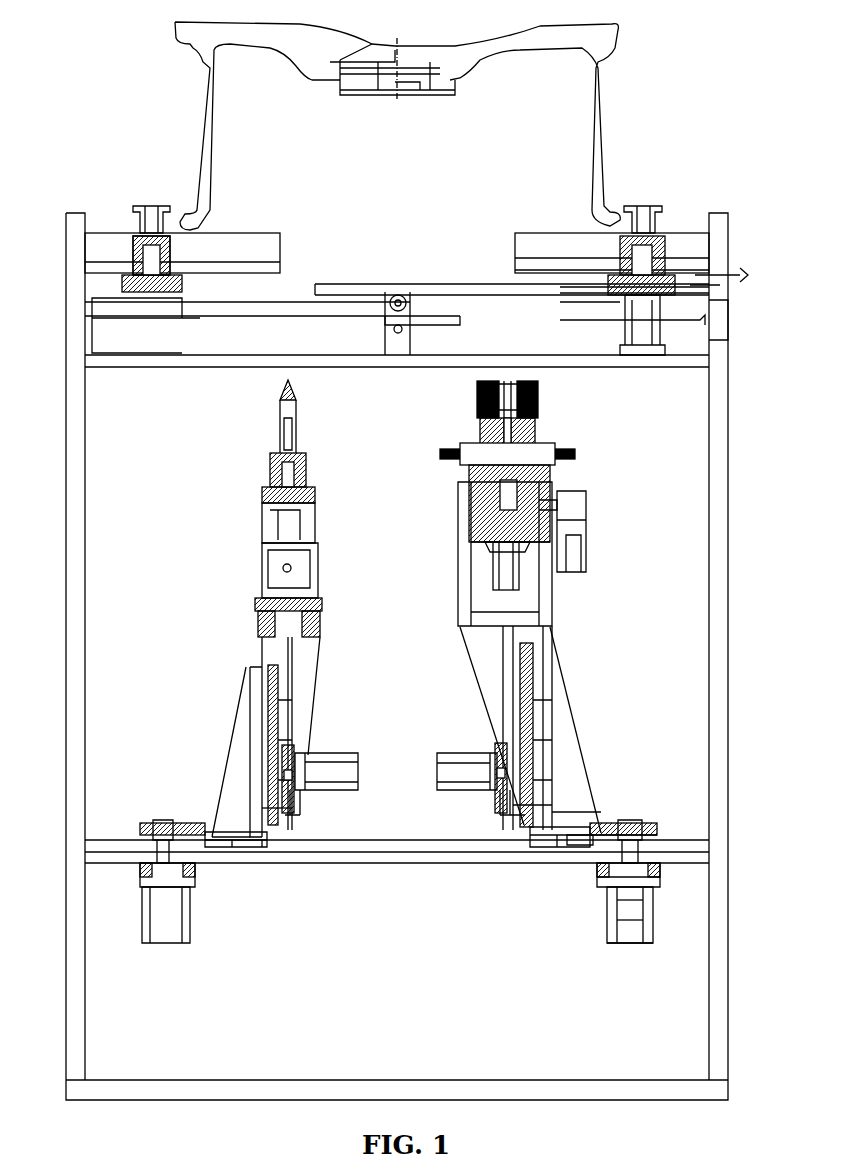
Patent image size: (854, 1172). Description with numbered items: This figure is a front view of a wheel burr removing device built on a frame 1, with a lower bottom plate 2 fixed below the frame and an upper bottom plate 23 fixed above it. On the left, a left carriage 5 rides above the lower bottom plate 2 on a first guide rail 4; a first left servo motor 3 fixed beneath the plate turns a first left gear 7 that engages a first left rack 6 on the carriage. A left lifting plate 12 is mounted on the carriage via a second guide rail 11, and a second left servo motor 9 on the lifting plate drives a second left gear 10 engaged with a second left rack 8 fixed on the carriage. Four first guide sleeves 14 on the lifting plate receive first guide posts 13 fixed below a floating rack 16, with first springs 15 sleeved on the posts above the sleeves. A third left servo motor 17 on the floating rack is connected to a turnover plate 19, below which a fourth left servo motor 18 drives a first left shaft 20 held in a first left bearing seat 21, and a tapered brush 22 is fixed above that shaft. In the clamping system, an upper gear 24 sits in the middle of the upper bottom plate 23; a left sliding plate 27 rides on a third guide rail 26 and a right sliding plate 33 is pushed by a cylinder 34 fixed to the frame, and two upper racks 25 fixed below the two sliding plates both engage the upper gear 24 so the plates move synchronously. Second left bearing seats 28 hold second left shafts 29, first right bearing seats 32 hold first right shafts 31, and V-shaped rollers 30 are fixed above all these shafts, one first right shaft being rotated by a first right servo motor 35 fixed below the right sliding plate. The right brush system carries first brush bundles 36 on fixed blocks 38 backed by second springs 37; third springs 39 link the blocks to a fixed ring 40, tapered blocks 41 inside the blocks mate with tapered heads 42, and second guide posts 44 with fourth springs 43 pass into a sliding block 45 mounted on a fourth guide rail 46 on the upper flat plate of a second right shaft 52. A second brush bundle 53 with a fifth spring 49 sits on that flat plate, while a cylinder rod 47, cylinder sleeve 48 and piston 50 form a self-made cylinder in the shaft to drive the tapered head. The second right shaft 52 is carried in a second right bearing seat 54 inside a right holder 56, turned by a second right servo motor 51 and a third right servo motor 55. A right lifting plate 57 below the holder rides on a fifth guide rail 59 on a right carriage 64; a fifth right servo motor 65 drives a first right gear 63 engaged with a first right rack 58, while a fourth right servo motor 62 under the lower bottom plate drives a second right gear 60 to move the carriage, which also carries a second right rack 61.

The frame 1 is at (76, 1062).
The lower bottom plate 2 is at (350, 861).
The first left servo motor 3 is at (165, 922).
The first guide rail 4 is at (260, 865).
The left carriage 5 is at (220, 860).
The first left rack 6 is at (195, 860).
The first left gear 7 is at (155, 850).
The second left rack 8 is at (250, 810).
The second left servo motor 9 is at (250, 790).
The second left gear 10 is at (250, 768).
The second guide rail 11 is at (250, 742).
The left lifting plate 12 is at (255, 710).
The first guide posts 13 is at (255, 665).
The first guide sleeves 14 is at (258, 645).
The first springs 15 is at (258, 625).
The floating rack 16 is at (258, 597).
The third left servo motor 17 is at (262, 572).
The fourth left servo motor 18 is at (262, 528).
The turnover plate 19 is at (262, 499).
The first left shaft 20 is at (262, 484).
The first left bearing seat 21 is at (270, 469).
The tapered brush 22 is at (282, 410).
The upper bottom plate 23 is at (290, 367).
The upper gear 24 is at (390, 305).
The upper racks 25 is at (268, 357).
The third guide rail 26 is at (255, 303).
The left sliding plate 27 is at (122, 300).
The second left bearing seats 28 is at (128, 281).
The second left shafts 29 is at (125, 257).
The V-shaped rollers 30 is at (140, 218).
The first right shafts 31 is at (655, 236).
The first right bearing seats 32 is at (660, 258).
The right sliding plate 33 is at (668, 285).
The cylinder 34 is at (648, 306).
The first right servo motor 35 is at (640, 326).
The first brush bundles 36 is at (600, 367).
The second springs 37 is at (542, 382).
The fixed blocks 38 is at (543, 390).
The third springs 39 is at (545, 393).
The fixed ring 40 is at (547, 400).
The tapered blocks 41 is at (547, 410).
The tapered heads 42 is at (560, 421).
The fourth springs 43 is at (549, 423).
The second guide posts 44 is at (549, 428).
The sliding block 45 is at (549, 435).
The fourth guide rail 46 is at (549, 442).
The cylinder rod 47 is at (549, 452).
The cylinder sleeve 48 is at (549, 460).
The fifth spring 49 is at (549, 467).
The piston 50 is at (549, 481).
The second right servo motor 51 is at (549, 494).
The second right shaft 52 is at (549, 513).
The second brush bundle 53 is at (549, 551).
The second right bearing seat 54 is at (549, 573).
The third right servo motor 55 is at (549, 615).
The right holder 56 is at (549, 661).
The right lifting plate 57 is at (549, 695).
The first right rack 58 is at (549, 716).
The fifth guide rail 59 is at (549, 730).
The second right gear 60 is at (549, 750).
The second right rack 61 is at (549, 769).
The fourth right servo motor 62 is at (549, 790).
The first right gear 63 is at (549, 812).
The right carriage 64 is at (552, 827).
The fifth right servo motor 65 is at (560, 840).